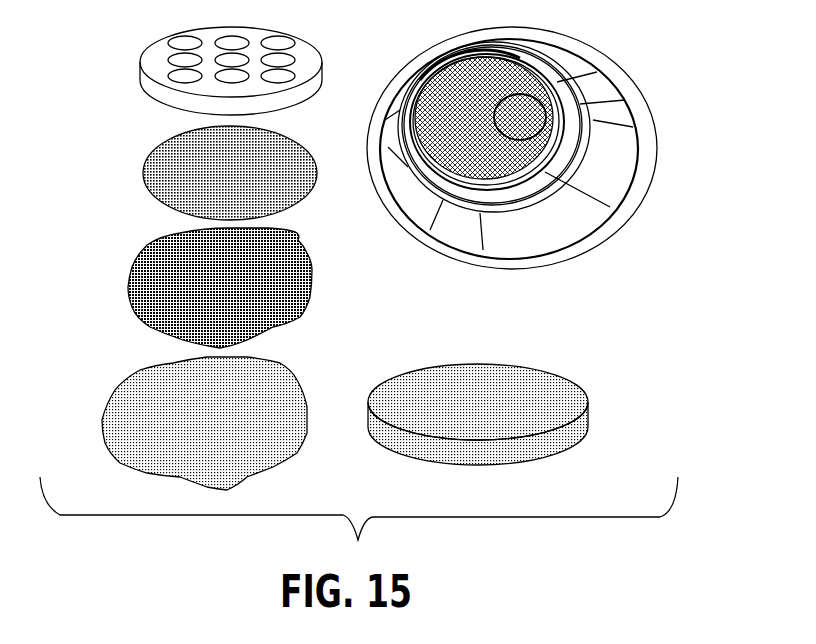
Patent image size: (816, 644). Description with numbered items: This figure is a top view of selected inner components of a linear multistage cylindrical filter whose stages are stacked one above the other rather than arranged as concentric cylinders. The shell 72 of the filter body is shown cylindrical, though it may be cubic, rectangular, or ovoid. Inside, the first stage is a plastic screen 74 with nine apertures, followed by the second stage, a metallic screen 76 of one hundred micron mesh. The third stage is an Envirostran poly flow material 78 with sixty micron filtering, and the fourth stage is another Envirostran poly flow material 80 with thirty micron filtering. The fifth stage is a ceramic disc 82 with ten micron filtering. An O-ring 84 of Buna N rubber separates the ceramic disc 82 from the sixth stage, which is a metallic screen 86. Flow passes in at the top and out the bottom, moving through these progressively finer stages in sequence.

The shell 72 is at (610, 222).
The plastic screen 74 is at (153, 62).
The metallic screen 76 is at (185, 160).
The Envirostran poly flow material 78 is at (140, 402).
The Envirostran poly flow material 80 is at (130, 277).
The ceramic disc 82 is at (537, 393).
The O-ring 84 is at (563, 107).
The metallic screen 86 is at (463, 102).